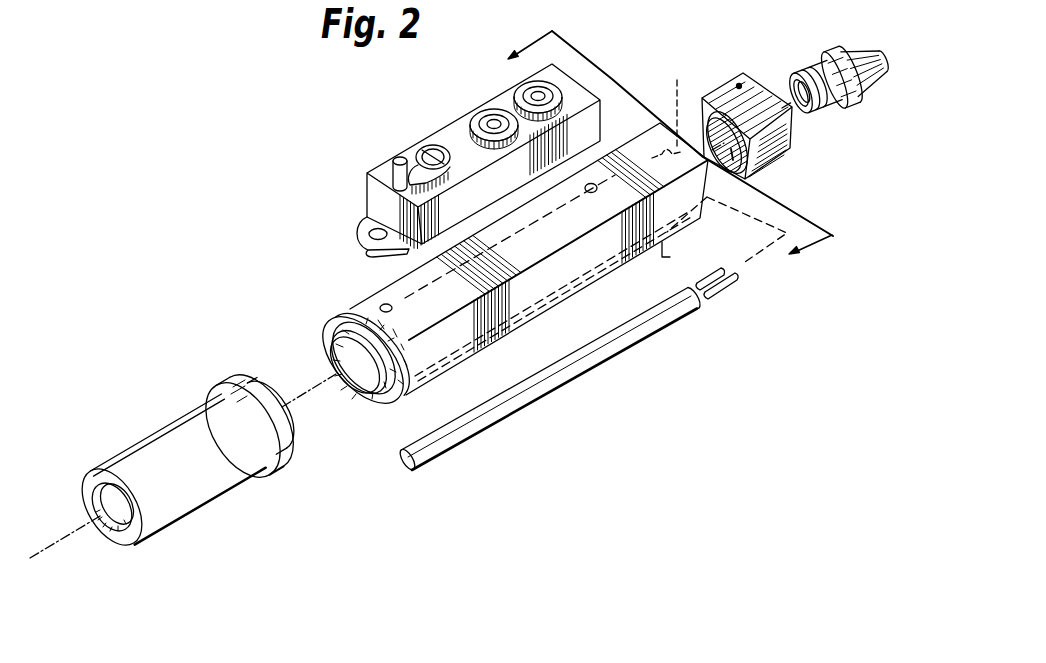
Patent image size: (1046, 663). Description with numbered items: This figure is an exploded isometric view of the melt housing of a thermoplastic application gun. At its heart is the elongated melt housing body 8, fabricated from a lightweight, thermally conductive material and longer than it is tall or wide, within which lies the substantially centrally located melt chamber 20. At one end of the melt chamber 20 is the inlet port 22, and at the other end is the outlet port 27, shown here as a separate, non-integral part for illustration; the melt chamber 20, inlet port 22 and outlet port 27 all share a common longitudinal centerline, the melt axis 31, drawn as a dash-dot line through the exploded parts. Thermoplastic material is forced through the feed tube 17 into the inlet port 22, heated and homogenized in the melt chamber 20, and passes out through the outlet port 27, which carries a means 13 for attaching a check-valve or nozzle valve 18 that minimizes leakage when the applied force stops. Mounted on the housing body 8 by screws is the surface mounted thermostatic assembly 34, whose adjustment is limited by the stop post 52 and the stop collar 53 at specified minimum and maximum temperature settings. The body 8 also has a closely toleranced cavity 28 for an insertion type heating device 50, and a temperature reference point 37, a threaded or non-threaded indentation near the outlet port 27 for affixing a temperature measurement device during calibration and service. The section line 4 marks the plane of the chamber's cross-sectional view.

The section line 4- 4 is at (678, 134).
The melt housing body 8 is at (385, 283).
The means for attaching check-valve 13 is at (827, 92).
The feed tube 17 is at (176, 424).
The nozzle valve 18 is at (830, 48).
The melt chamber 20 is at (715, 166).
The inlet port 22 is at (338, 330).
The outlet port 27 is at (735, 153).
The heater cavity 28 is at (563, 296).
The melt axis 31 is at (65, 537).
The thermostatic assembly 34 is at (477, 107).
The temperature reference point 37 is at (762, 113).
The heating device 50 is at (621, 350).
The stop post 52 is at (399, 157).
The stop collar 53 is at (421, 148).